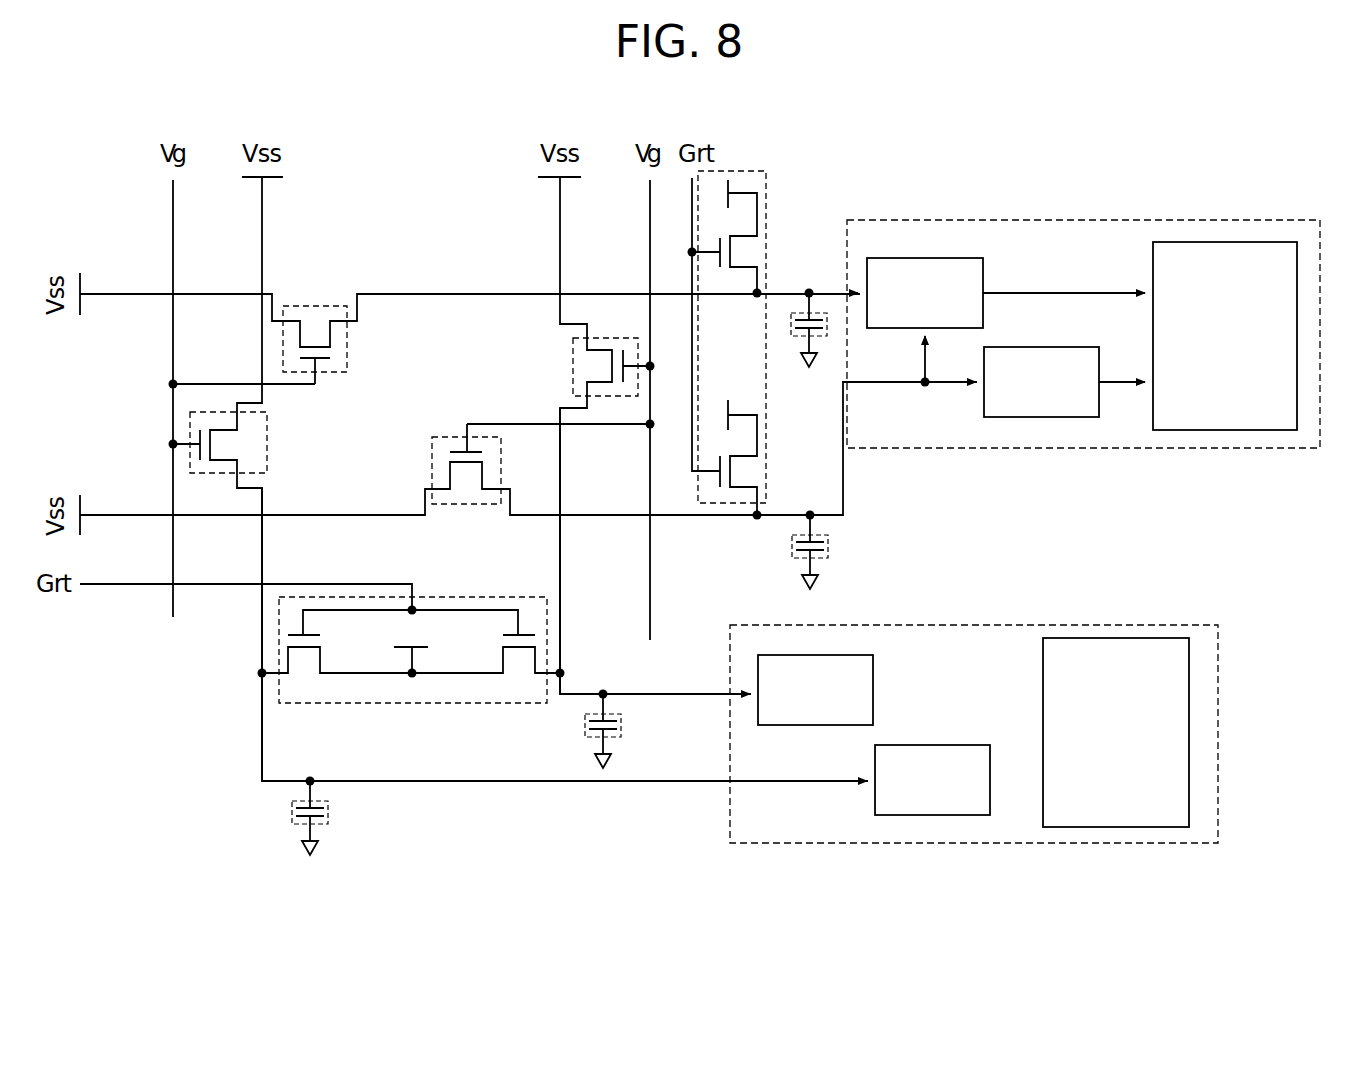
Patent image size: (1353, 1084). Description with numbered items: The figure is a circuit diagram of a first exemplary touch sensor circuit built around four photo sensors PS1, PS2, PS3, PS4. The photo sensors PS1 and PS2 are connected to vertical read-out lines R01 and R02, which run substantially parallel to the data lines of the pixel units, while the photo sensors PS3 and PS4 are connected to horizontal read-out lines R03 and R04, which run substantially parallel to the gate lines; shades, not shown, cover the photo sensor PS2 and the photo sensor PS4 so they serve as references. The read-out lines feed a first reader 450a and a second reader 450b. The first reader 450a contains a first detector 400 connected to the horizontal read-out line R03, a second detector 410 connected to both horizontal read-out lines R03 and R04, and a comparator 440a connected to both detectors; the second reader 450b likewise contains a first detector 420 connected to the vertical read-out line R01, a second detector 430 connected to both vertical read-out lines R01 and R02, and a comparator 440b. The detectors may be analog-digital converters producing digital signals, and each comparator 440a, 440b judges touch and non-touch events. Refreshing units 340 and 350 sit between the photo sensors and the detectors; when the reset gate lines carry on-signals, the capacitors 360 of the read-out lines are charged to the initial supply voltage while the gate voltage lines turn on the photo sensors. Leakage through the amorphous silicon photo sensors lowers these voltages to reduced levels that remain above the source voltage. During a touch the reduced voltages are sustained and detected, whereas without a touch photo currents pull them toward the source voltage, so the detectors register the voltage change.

The photo sensor PS1 is at (253, 448).
The photo sensor PS2 is at (573, 367).
The photo sensor PS3 is at (467, 497).
The photo sensor PS4 is at (318, 306).
The vertical read-out line R01 is at (262, 552).
The vertical read-out line R02 is at (560, 577).
The horizontal read-out line R03 is at (705, 515).
The horizontal read-out line R04 is at (403, 294).
The refreshing unit 340 is at (410, 703).
The refreshing unit 350 is at (753, 171).
The capacitor 360 is at (793, 313).
The first detector 400 is at (1042, 417).
The second detector 410 is at (917, 258).
The first detector 420 is at (932, 745).
The second detector 430 is at (758, 666).
The comparator 440a is at (1228, 242).
The comparator 440b is at (975, 625).
The first reader 450a is at (1083, 327).
The second reader 450b is at (935, 698).